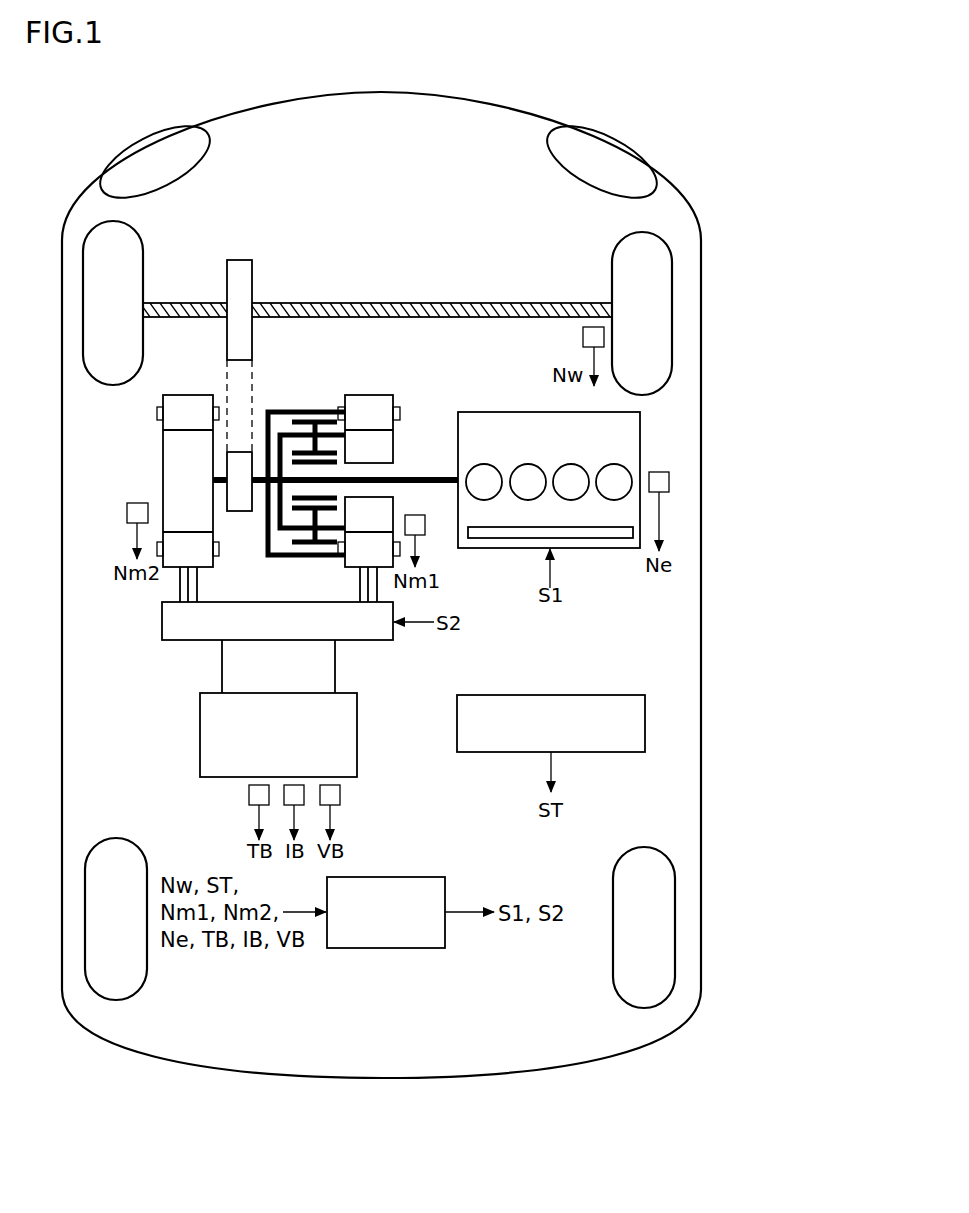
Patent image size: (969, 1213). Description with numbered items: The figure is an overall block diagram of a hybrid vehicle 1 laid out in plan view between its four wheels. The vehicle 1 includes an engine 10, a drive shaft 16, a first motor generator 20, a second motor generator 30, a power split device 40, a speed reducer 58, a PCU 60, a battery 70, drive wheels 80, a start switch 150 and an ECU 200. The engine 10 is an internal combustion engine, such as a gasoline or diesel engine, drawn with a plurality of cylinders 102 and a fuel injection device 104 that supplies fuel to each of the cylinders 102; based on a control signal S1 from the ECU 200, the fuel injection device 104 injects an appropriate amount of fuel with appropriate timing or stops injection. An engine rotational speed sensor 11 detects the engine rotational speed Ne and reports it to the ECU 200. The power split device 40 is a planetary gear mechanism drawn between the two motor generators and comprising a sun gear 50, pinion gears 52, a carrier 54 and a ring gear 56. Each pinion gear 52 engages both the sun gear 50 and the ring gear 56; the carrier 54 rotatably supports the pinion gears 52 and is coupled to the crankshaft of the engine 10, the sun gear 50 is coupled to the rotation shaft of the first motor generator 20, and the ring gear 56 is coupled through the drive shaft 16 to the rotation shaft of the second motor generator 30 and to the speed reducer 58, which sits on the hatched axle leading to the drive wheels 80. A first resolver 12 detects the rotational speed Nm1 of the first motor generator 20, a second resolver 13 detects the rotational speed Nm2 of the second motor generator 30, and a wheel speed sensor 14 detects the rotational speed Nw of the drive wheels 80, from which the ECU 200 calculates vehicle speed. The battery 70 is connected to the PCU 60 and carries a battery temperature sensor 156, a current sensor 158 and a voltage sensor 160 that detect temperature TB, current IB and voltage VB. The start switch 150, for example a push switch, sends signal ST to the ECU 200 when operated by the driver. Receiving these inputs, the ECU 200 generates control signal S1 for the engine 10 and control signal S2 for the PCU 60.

The vehicle 1 is at (372, 61).
The engine 10 is at (549, 479).
The engine rotational speed sensor 11 is at (658, 472).
The first resolver 12 is at (414, 515).
The second resolver 13 is at (138, 503).
The wheel speed sensor 14 is at (583, 336).
The drive shaft 16 is at (266, 530).
The first motor generator 20 is at (373, 395).
The second motor generator 30 is at (191, 395).
The power split device 40 is at (295, 466).
The sun gear 50 is at (320, 495).
The pinion gears 52 is at (323, 546).
The carrier 54 is at (283, 530).
The ring gear 56 is at (292, 411).
The speed reducer 58 is at (242, 260).
The PCU 60 is at (162, 618).
The battery 70 is at (200, 732).
The drive wheels 80 is at (628, 238).
The cylinders 102 is at (572, 463).
The fuel injection device 104 is at (593, 540).
The start switch 150 is at (596, 695).
The battery temperature sensor 156 is at (249, 796).
The current sensor 158 is at (300, 785).
The voltage sensor 160 is at (342, 796).
The ECU 200 is at (383, 948).